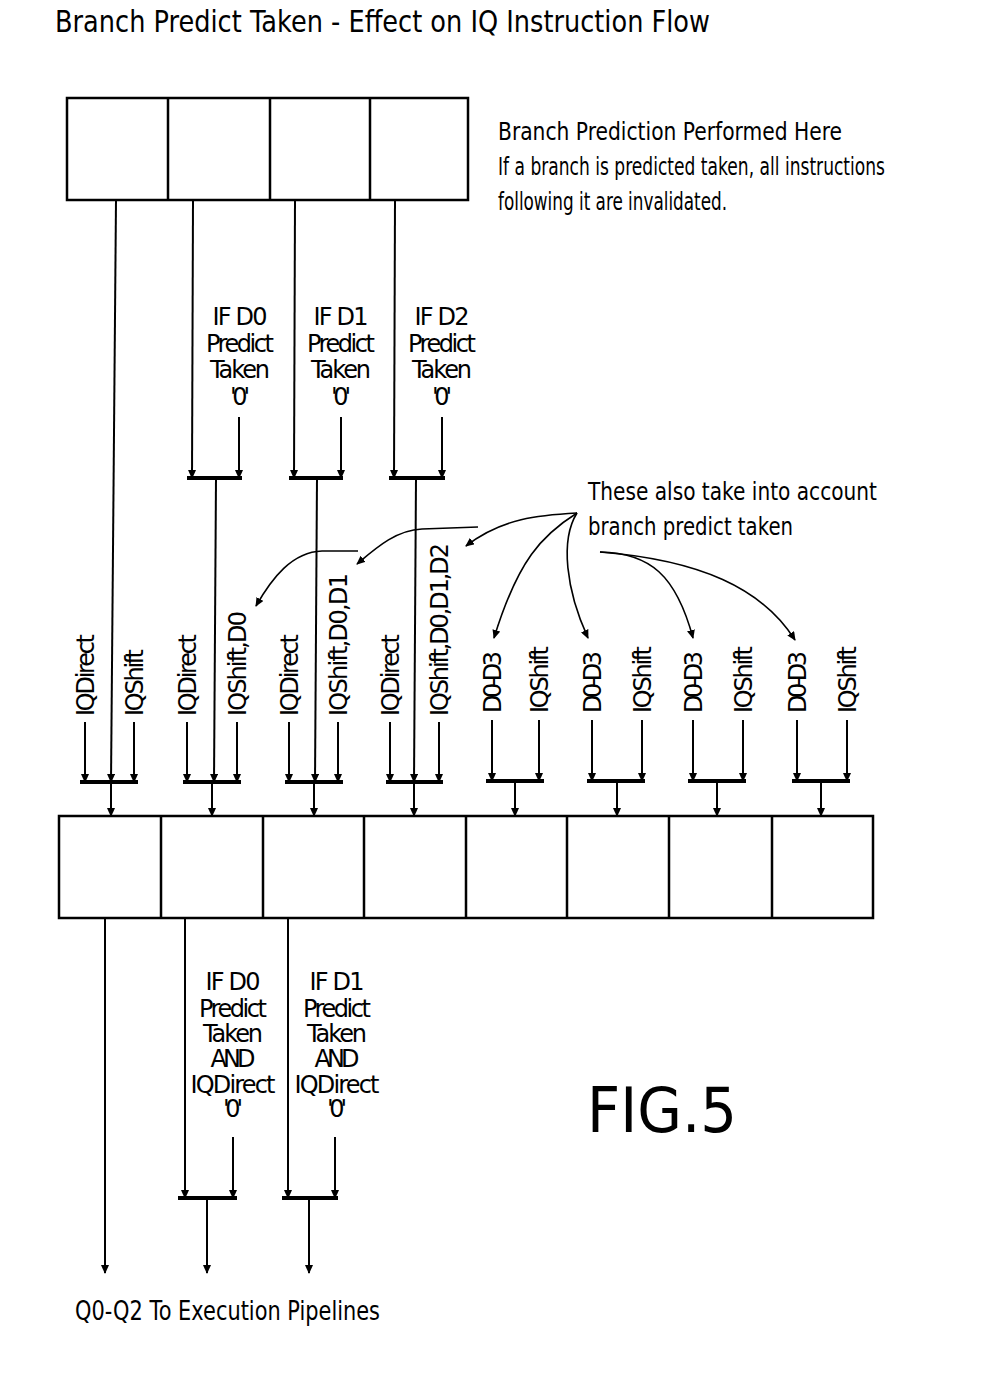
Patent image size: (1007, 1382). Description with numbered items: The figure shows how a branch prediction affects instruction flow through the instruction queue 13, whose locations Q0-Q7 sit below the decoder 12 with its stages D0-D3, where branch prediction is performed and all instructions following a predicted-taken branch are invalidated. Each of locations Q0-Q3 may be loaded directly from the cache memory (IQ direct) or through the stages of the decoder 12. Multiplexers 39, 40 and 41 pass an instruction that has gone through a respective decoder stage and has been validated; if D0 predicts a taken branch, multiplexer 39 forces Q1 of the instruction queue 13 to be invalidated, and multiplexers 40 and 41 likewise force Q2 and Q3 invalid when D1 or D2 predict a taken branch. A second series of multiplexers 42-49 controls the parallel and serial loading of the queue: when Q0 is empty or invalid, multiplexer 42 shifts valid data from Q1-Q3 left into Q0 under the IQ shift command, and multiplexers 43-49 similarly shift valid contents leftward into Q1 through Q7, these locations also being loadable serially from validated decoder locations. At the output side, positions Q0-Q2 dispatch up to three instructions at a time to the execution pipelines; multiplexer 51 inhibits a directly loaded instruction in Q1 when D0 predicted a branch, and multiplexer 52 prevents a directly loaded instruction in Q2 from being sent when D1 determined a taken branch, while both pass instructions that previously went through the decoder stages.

The decoder 12 is at (468, 100).
The instruction queue 13 is at (59, 876).
The multiplexer 39 is at (204, 482).
The multiplexer 40 is at (306, 482).
The multiplexer 41 is at (406, 482).
The multiplexer 42 is at (100, 785).
The multiplexer 43 is at (202, 785).
The multiplexer 44 is at (304, 785).
The multiplexer 45 is at (405, 785).
The multiplexer 46 is at (506, 784).
The multiplexer 47 is at (606, 784).
The multiplexer 48 is at (707, 784).
The multiplexer 49 is at (810, 784).
The multiplexer 51 is at (196, 1201).
The multiplexer 52 is at (300, 1201).